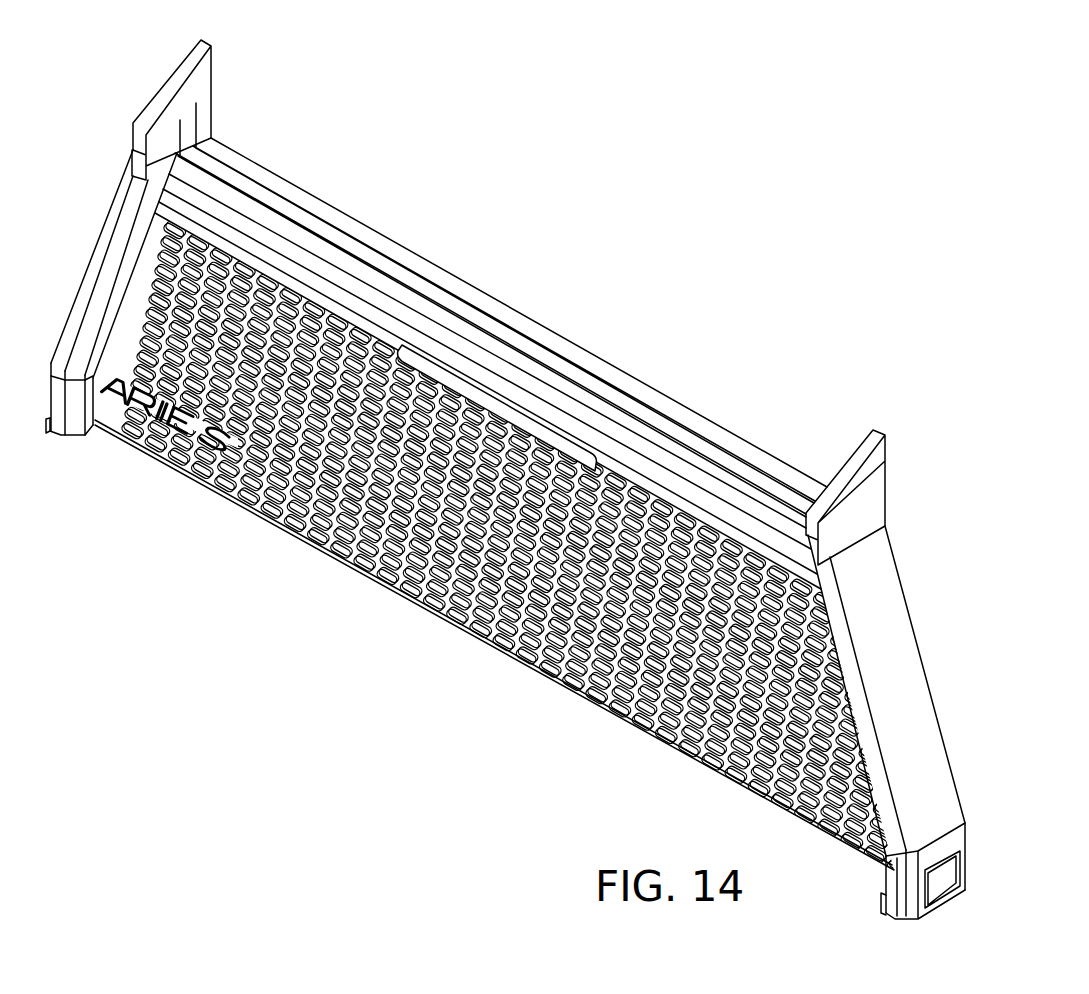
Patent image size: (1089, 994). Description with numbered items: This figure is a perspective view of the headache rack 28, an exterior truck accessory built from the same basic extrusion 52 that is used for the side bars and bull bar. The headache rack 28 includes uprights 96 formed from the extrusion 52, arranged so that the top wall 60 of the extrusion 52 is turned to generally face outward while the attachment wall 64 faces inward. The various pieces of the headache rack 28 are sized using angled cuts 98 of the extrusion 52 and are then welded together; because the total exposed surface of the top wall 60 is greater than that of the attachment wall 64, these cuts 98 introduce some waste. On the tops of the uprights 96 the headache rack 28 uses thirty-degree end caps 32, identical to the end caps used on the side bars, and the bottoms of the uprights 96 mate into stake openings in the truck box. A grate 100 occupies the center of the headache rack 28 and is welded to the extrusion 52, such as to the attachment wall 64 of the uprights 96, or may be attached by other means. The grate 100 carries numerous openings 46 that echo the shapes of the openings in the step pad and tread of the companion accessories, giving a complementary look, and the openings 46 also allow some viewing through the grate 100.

The headache rack 28 is at (591, 246).
The end cap 32 is at (182, 86).
The openings 46 is at (510, 647).
The extrusion 52 is at (630, 388).
The top wall 60 is at (888, 645).
The attachment wall 64 is at (401, 253).
The uprights 96 is at (82, 272).
The angled cuts 98 is at (856, 528).
The grate 100 is at (331, 545).